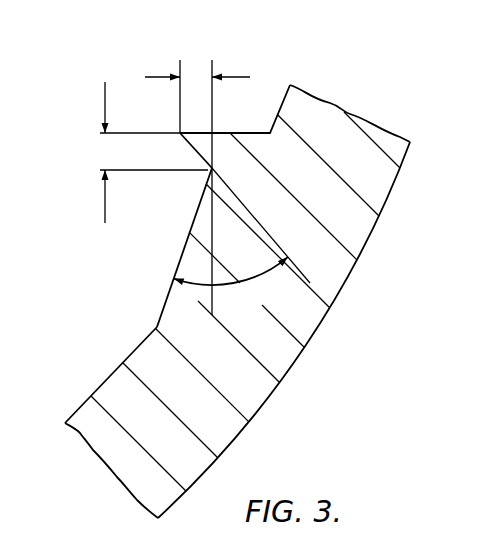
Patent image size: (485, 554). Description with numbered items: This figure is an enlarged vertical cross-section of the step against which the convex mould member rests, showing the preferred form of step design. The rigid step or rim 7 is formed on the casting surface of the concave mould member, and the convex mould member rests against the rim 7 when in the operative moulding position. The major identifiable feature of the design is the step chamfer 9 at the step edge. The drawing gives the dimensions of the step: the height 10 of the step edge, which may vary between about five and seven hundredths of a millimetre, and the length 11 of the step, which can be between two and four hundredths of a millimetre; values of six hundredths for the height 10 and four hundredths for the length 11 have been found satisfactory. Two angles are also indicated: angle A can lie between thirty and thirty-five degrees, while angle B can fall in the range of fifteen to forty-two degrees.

The step or rim 7 is at (193, 150).
The step chamfer 9 is at (188, 235).
The height of the step edge 10 is at (104, 151).
The length of the step 11 is at (199, 75).
The angle A is at (242, 239).
The angle B is at (186, 305).